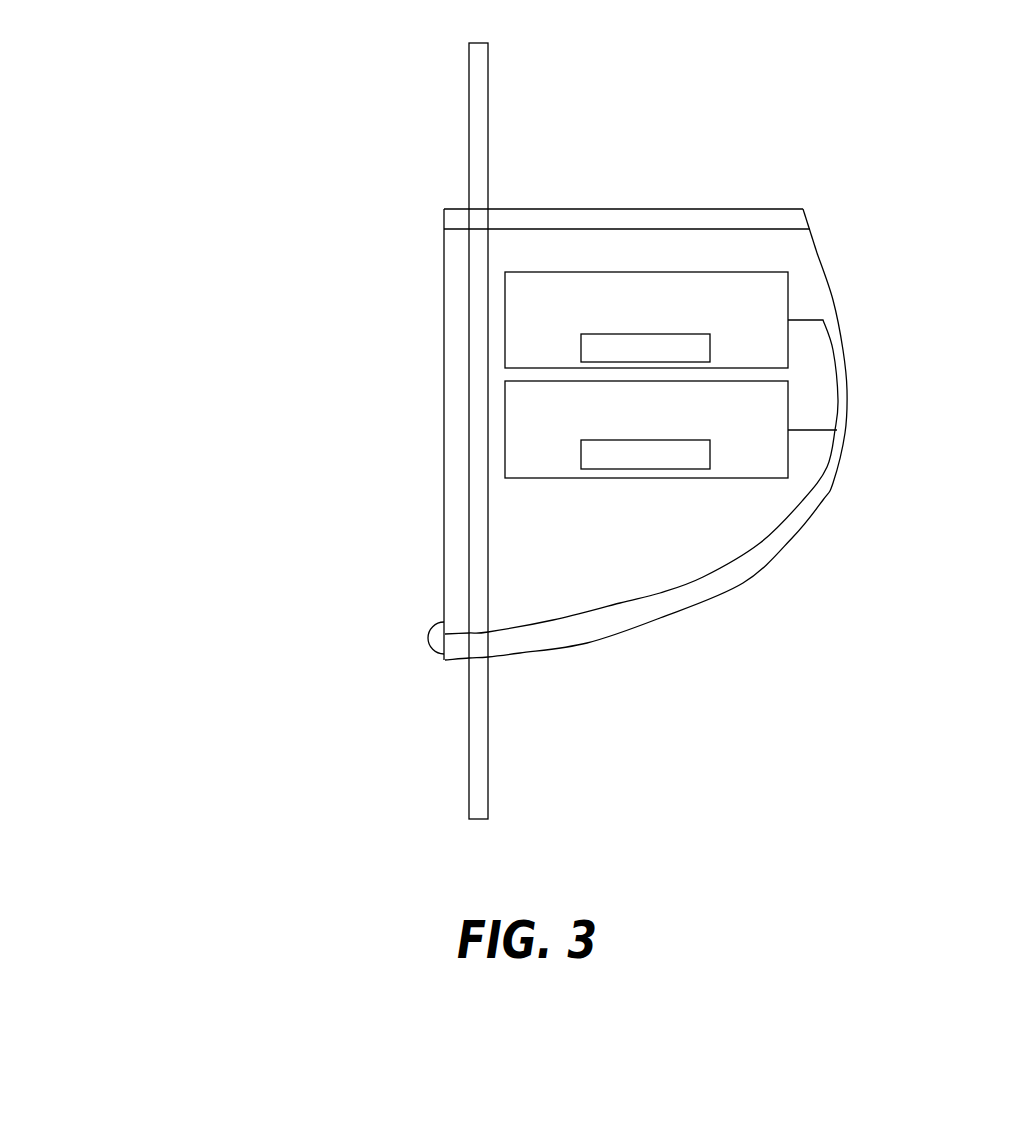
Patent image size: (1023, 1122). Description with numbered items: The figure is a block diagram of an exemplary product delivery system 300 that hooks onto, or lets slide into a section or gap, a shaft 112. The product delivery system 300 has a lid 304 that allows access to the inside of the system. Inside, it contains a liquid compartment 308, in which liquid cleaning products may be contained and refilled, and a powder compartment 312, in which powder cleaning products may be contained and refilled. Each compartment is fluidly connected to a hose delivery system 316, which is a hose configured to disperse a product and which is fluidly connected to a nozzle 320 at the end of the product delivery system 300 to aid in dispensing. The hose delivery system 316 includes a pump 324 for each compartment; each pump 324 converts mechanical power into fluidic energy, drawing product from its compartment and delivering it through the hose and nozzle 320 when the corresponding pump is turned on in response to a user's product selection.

The shaft 112 is at (469, 109).
The product delivery system 300 is at (570, 100).
The lid 304 is at (727, 218).
The liquid compartment 308 is at (765, 320).
The powder compartment 312 is at (765, 430).
The hose delivery system 316 is at (703, 577).
The nozzle 320 is at (430, 628).
The pump 324 is at (645, 401).